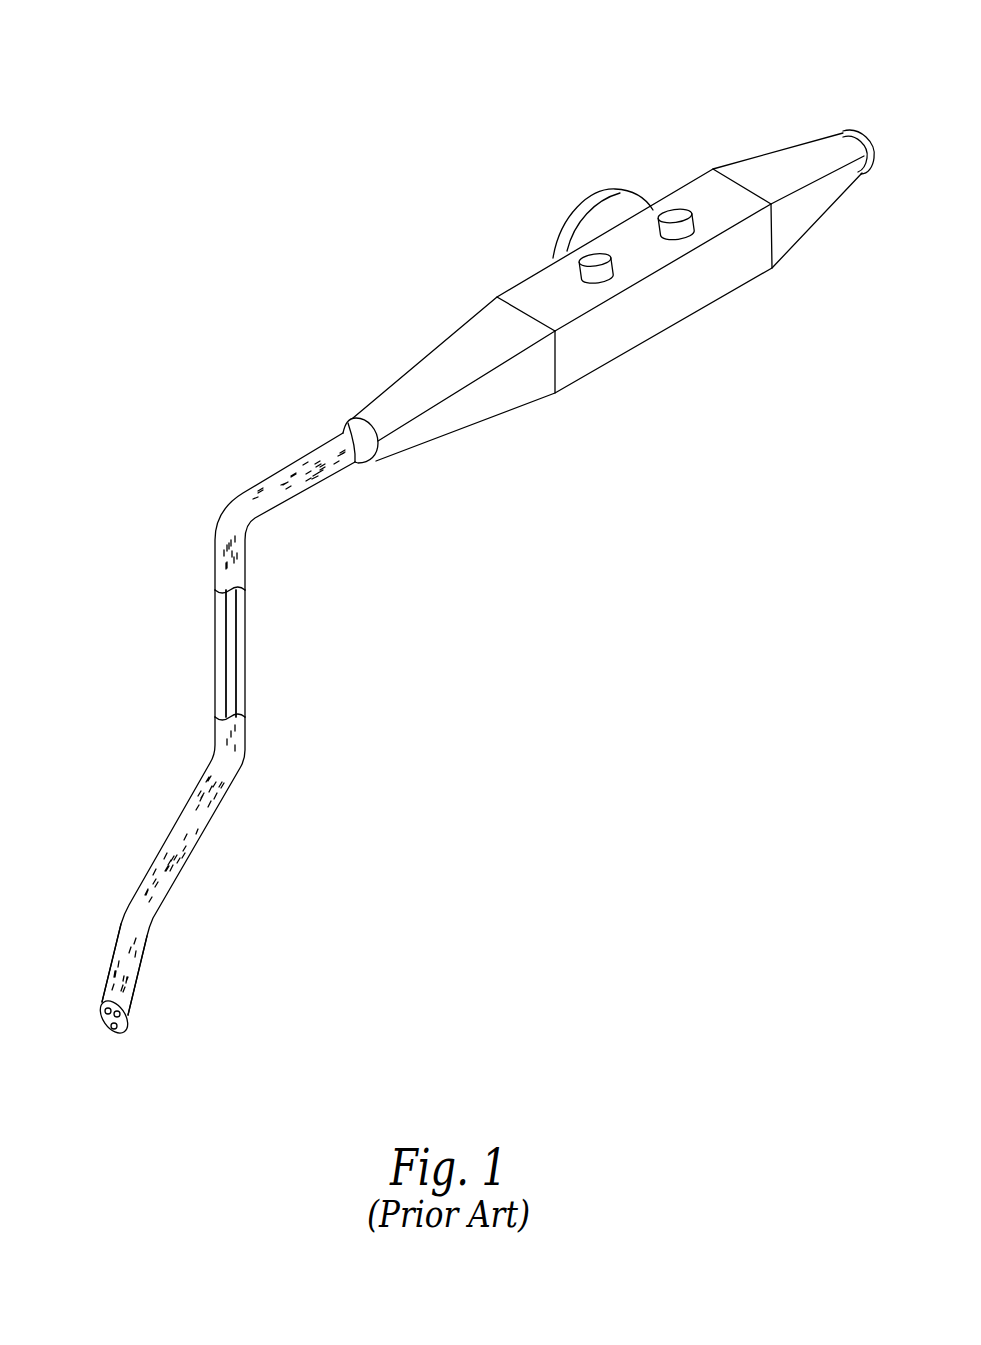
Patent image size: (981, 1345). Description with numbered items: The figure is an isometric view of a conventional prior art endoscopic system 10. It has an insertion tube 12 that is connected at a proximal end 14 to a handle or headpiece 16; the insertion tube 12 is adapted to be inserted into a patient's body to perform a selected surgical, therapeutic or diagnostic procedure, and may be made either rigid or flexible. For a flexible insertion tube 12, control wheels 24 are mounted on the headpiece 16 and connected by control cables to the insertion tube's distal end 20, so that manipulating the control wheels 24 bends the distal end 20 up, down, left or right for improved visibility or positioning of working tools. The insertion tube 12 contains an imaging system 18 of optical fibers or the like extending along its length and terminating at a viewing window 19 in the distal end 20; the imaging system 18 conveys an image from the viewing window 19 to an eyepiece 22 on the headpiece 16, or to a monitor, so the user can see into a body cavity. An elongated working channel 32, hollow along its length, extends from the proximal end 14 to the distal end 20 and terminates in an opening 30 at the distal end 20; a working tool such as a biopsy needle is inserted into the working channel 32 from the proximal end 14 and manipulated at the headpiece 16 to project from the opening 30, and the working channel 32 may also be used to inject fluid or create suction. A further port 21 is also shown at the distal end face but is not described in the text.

The endoscopic system 10 is at (597, 508).
The insertion tube 12 is at (240, 496).
The proximal end 14 is at (349, 421).
The headpiece 16 is at (482, 332).
The imaging system 18 is at (247, 643).
The viewing window 19 is at (118, 1033).
The distal end 20 is at (137, 958).
The port 21 is at (125, 1013).
The eyepiece 22 is at (872, 138).
The control wheels 24 is at (592, 195).
The opening 30 is at (107, 1011).
The working channel 32 is at (215, 667).